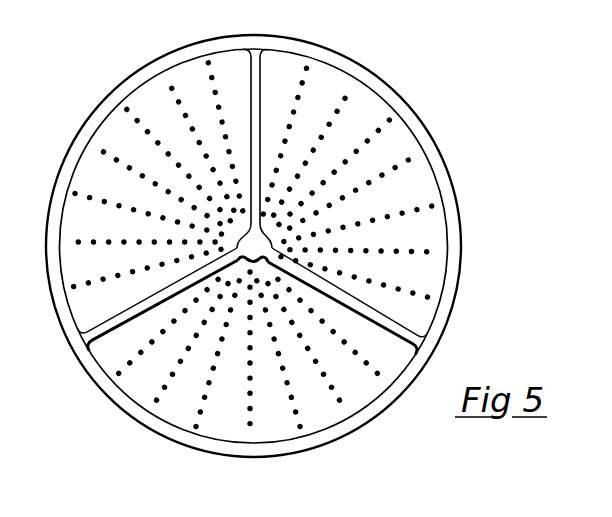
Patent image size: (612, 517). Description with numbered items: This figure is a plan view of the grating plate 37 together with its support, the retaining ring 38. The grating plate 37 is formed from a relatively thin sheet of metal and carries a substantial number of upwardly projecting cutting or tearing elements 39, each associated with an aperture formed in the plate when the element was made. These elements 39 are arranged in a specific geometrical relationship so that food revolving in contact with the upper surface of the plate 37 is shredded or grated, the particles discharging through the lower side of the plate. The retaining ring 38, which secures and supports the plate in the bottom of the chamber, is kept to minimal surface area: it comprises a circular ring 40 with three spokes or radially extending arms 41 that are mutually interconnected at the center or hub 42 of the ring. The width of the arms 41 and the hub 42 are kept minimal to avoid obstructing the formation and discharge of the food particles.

The grating plate 37 is at (300, 389).
The retaining ring 38 is at (383, 80).
The cutting or tearing elements 39 is at (177, 315).
The circular ring 40 is at (108, 103).
The spokes or radially extending arms 41 is at (397, 333).
The hub 42 is at (250, 238).